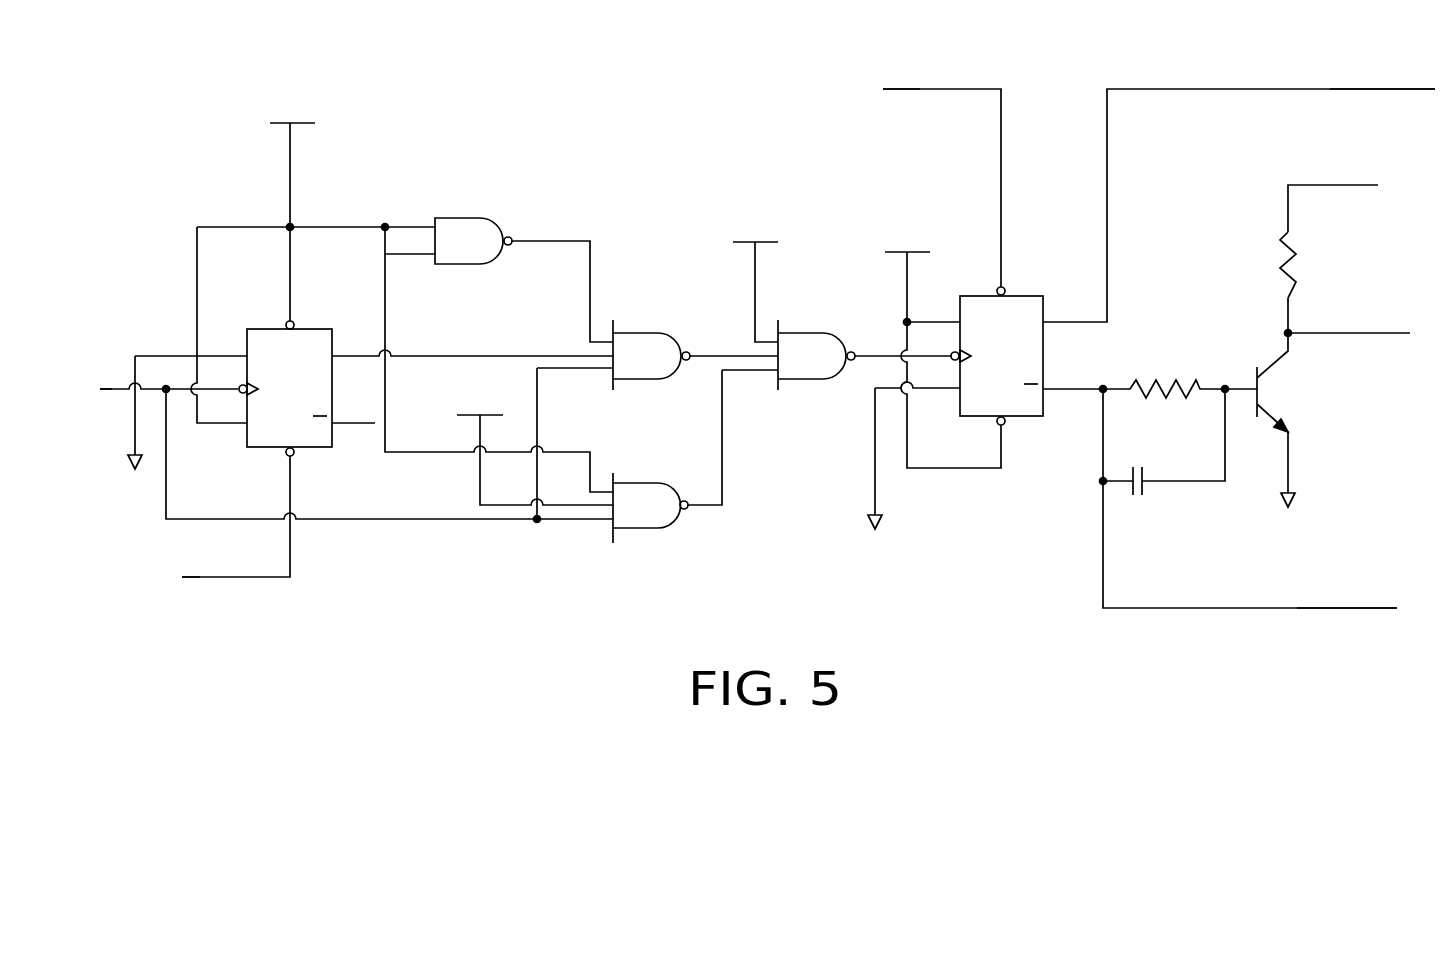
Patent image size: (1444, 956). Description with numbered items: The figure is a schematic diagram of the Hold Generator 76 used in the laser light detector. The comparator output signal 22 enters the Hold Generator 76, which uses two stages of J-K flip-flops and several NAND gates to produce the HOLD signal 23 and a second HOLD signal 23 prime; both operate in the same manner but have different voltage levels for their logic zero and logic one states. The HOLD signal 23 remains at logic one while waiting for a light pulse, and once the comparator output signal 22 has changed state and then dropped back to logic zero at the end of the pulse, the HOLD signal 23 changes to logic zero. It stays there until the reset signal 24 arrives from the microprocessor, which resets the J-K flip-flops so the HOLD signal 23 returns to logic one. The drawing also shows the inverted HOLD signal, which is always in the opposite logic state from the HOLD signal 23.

The Hold Generator 76 is at (633, 116).
The comparator output signal 22 is at (100, 388).
The RESET signal 24 is at (200, 577).
The HOLD signal 23 is at (1330, 89).